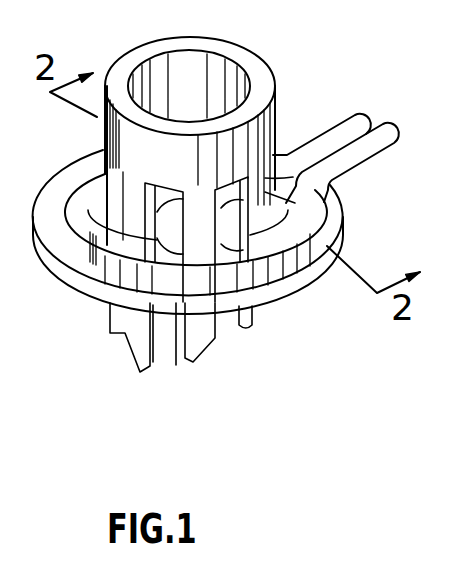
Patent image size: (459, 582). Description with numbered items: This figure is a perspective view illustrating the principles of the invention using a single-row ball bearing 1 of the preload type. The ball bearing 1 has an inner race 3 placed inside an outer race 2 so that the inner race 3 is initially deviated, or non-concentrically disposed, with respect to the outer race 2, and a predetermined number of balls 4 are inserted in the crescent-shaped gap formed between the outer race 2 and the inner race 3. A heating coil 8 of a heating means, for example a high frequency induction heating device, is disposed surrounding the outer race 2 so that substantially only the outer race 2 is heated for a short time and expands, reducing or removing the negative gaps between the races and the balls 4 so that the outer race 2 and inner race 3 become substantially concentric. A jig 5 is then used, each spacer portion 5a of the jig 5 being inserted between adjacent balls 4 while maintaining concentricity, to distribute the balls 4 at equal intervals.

The ball bearing 1 is at (292, 250).
The outer race 2 is at (243, 285).
The inner race 3 is at (167, 243).
The balls 4 is at (236, 258).
The jig 5 is at (272, 120).
The spacer portion 5a is at (207, 218).
The heating coil 8 is at (328, 244).